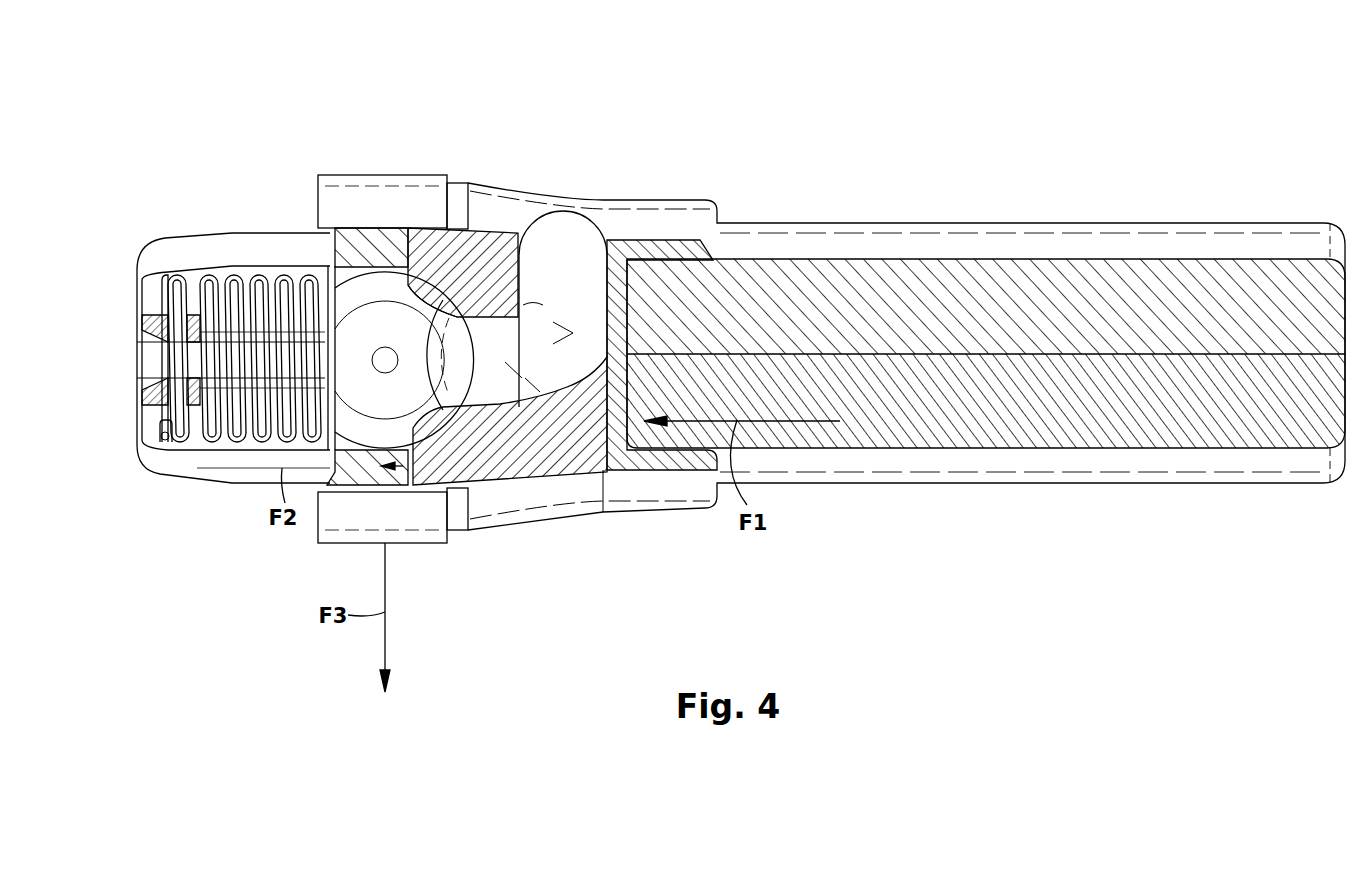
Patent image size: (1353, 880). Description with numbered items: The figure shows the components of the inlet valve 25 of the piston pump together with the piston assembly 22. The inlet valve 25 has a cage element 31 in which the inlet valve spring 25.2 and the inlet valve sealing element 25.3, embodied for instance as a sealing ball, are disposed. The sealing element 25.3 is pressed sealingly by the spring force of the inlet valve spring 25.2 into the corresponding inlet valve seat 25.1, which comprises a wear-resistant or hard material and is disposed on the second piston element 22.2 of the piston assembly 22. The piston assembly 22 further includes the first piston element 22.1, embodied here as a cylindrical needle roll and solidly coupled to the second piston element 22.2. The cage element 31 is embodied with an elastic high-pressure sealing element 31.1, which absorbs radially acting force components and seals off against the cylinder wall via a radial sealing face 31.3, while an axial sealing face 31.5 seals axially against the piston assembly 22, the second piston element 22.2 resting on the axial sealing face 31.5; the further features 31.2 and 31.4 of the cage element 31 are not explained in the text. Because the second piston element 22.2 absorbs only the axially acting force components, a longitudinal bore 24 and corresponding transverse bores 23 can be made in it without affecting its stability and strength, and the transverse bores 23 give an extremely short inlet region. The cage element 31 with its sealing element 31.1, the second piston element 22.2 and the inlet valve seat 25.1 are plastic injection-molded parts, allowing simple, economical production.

The piston assembly 22 is at (253, 104).
The first piston element 22.1 is at (1107, 410).
The second piston element 22.2 is at (597, 432).
The transverse bores 23 is at (567, 257).
The longitudinal bore 24 is at (500, 357).
The inlet valve 25 is at (485, 230).
The inlet valve seat 25.1 is at (445, 410).
The inlet valve spring 25.2 is at (190, 443).
The inlet valve sealing element 25.3 is at (380, 320).
The cage element 31 is at (232, 502).
The elastic high-pressure sealing element 31.1 is at (405, 510).
The upper housing flange 31.2 is at (310, 176).
The radial sealing face 31.3 is at (418, 175).
The bearing block 31.4 is at (330, 240).
The axial sealing face 31.5 is at (437, 279).